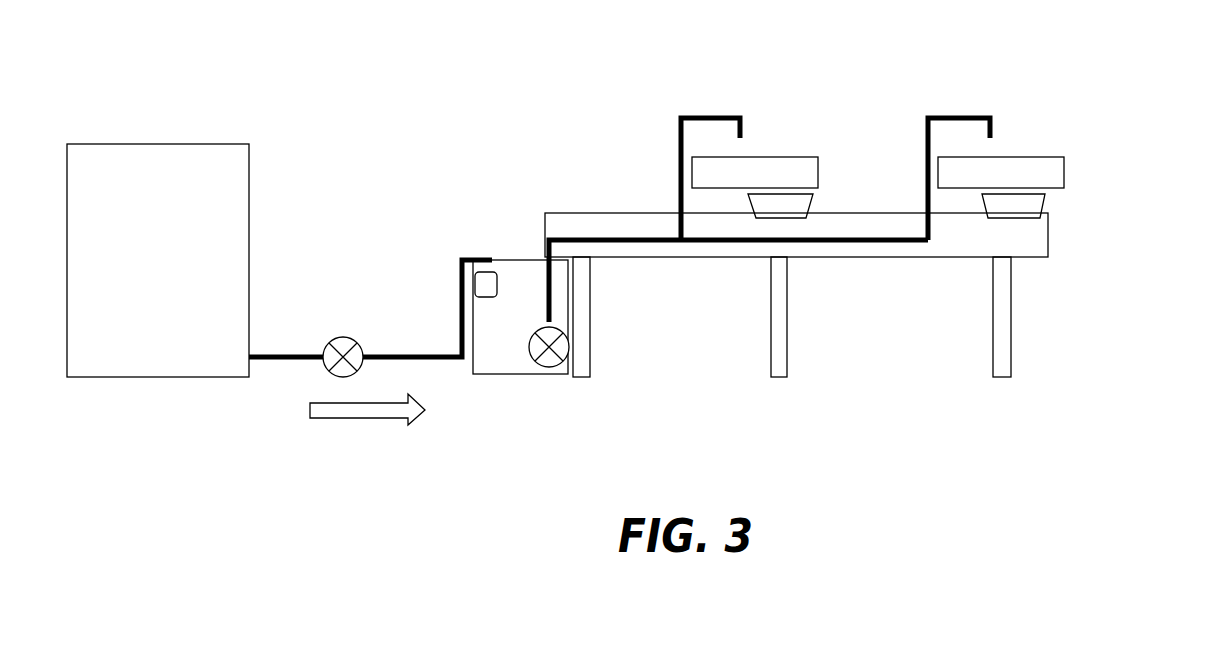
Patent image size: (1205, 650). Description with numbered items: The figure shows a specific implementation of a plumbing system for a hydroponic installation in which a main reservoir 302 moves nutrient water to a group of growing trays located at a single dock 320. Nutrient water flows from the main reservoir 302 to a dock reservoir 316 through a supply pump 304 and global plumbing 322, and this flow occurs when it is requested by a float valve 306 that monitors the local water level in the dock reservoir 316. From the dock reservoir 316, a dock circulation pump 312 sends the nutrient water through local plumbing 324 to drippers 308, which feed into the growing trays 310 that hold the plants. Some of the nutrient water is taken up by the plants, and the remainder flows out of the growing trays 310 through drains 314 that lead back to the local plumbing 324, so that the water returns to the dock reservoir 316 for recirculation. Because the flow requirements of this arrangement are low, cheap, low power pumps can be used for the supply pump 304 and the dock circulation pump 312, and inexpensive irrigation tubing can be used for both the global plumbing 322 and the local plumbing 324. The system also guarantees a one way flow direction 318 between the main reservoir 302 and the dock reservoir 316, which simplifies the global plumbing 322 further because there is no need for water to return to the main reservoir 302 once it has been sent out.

The main reservoir 302 is at (158, 260).
The supply pump 304 is at (343, 337).
The float valve 306 is at (488, 296).
The drippers 308 is at (743, 127).
The growing trays 310 is at (818, 172).
The dock circulation pump 312 is at (552, 366).
The drains 314 is at (1010, 194).
The dock reservoir 316 is at (519, 258).
The one way flow direction 318 is at (372, 418).
The dock 320 is at (1012, 322).
The global plumbing 322 is at (412, 352).
The local plumbing 324 is at (594, 238).